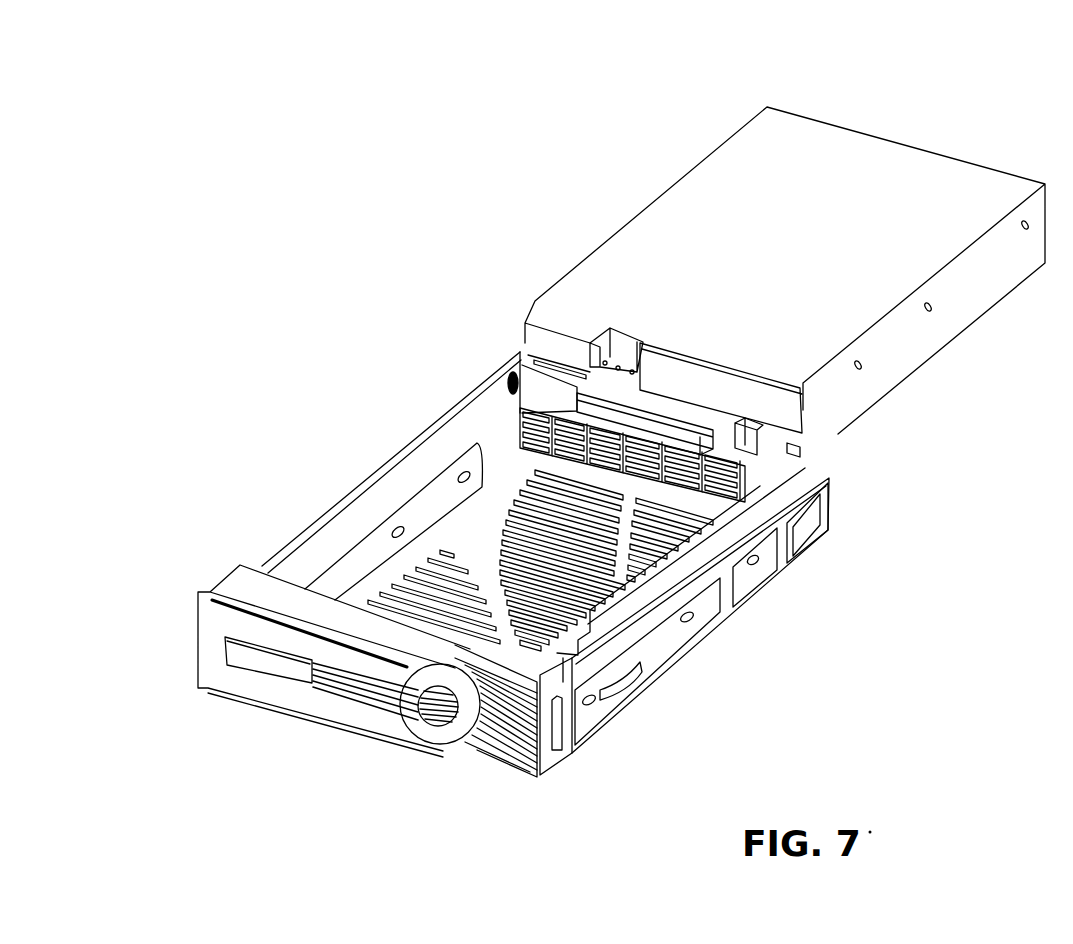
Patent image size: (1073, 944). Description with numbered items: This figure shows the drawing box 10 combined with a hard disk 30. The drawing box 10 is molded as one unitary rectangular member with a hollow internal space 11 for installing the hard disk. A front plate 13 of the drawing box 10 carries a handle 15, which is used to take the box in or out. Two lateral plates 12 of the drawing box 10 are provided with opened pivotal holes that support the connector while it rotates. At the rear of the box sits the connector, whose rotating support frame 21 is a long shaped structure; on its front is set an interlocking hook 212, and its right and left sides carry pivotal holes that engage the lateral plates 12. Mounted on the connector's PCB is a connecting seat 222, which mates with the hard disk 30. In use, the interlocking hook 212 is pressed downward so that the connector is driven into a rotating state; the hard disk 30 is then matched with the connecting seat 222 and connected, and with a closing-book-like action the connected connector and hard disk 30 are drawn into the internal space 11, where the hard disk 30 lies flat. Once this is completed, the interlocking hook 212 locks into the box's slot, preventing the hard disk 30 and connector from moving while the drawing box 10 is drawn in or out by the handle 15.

The drawing box 10 is at (262, 505).
The internal space 11 is at (518, 507).
The lateral plate 12 is at (395, 481).
The front plate 13 is at (547, 755).
The handle 15 is at (473, 713).
The rotating support frame 21 is at (758, 408).
The interlocking hook 212 is at (745, 445).
The connecting seat 222 is at (618, 410).
The hard disk 30 is at (857, 170).